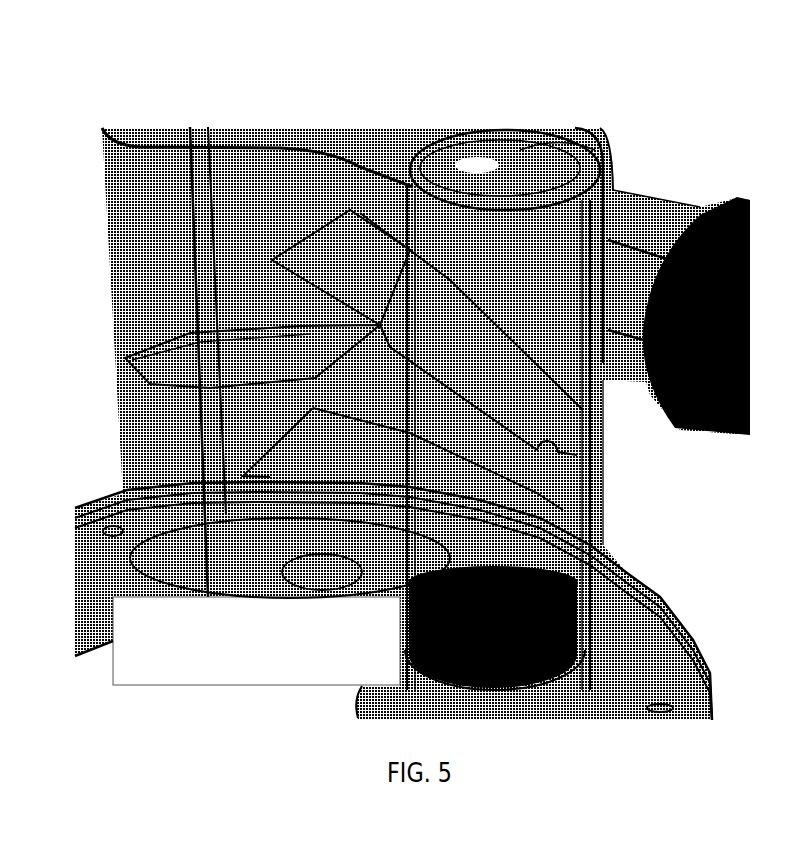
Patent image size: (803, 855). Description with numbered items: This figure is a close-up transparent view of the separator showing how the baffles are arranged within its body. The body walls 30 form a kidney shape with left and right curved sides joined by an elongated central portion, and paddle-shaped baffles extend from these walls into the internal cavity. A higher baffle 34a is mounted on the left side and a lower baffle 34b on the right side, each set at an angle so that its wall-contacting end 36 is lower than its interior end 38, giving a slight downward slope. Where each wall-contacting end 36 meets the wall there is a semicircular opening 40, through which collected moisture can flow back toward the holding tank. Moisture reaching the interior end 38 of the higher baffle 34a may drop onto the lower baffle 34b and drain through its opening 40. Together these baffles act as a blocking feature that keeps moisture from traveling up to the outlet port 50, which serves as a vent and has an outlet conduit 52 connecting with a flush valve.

The body wall 30 is at (593, 498).
The baffle 34a is at (503, 385).
The baffle 34b is at (285, 366).
The wall-contacting end 36 is at (597, 437).
The interior end 38 is at (307, 232).
The opening 40 is at (256, 641).
The outlet port 50 is at (597, 176).
The outlet conduit 52 is at (655, 233).